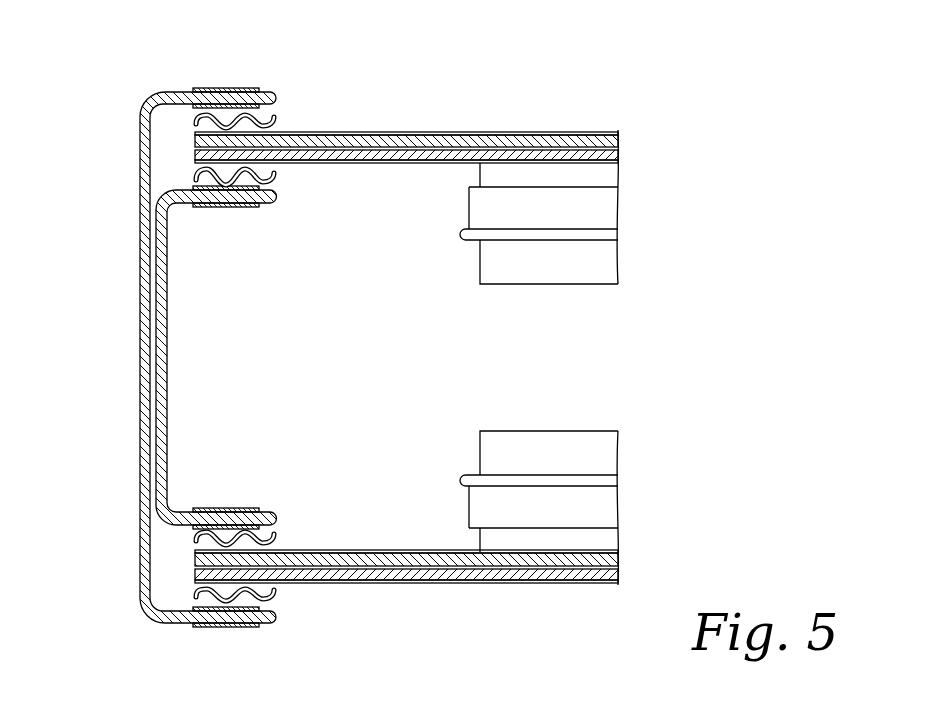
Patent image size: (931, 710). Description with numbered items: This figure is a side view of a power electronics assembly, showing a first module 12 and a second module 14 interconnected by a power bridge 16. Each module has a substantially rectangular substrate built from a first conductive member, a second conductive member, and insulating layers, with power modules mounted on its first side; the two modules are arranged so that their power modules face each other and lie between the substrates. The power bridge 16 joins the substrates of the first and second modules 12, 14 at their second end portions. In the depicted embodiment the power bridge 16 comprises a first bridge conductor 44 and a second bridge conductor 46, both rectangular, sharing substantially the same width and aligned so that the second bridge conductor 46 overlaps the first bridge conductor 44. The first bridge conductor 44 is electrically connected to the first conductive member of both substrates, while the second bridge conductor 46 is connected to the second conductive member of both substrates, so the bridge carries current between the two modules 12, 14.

The first module 12 is at (430, 134).
The second module 14 is at (430, 589).
The power bridge 16 is at (159, 357).
The first bridge conductor 44 is at (169, 283).
The second bridge conductor 46 is at (147, 279).